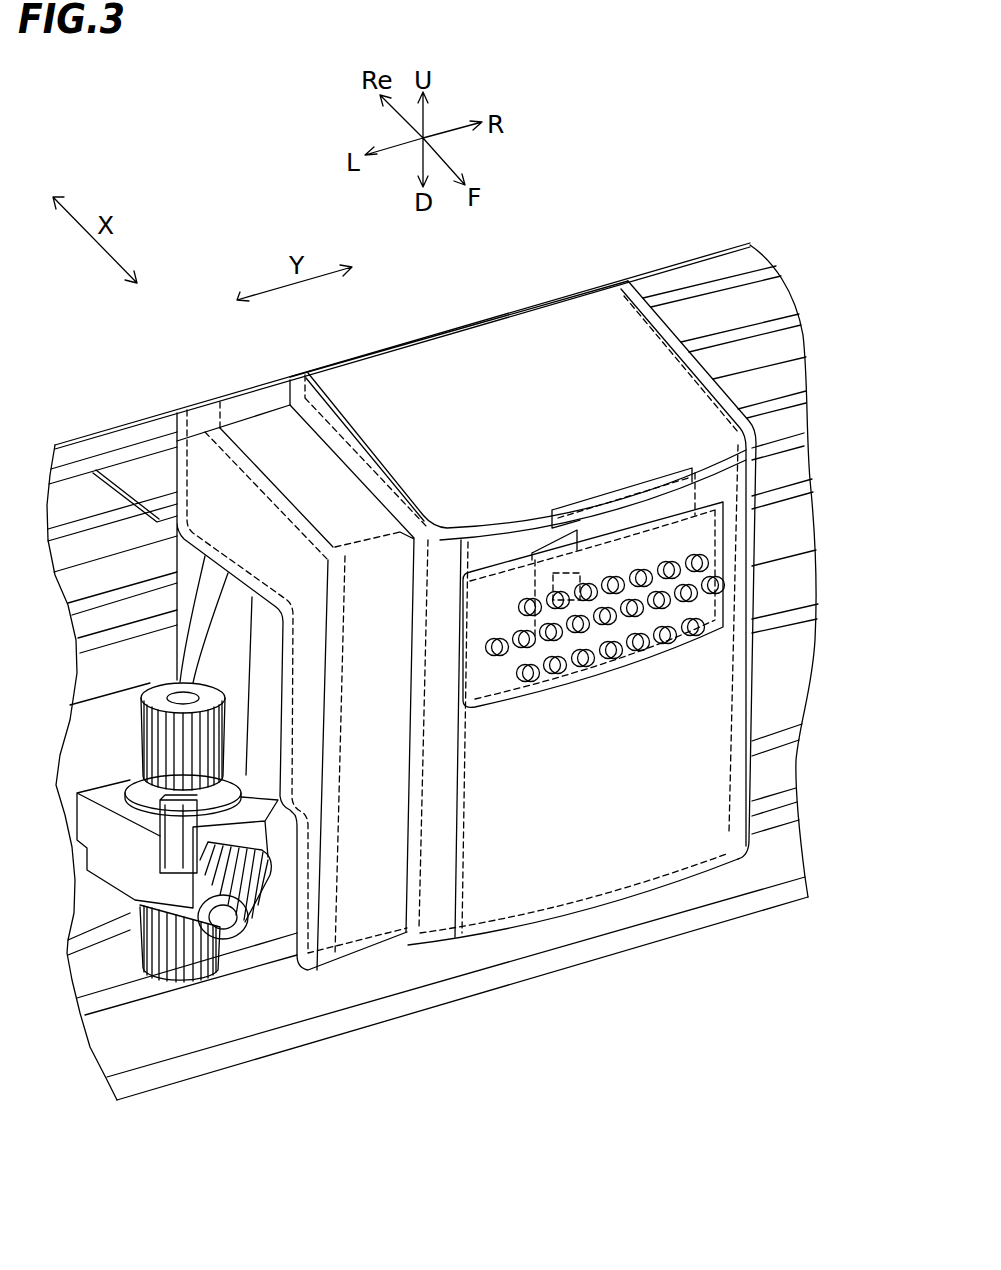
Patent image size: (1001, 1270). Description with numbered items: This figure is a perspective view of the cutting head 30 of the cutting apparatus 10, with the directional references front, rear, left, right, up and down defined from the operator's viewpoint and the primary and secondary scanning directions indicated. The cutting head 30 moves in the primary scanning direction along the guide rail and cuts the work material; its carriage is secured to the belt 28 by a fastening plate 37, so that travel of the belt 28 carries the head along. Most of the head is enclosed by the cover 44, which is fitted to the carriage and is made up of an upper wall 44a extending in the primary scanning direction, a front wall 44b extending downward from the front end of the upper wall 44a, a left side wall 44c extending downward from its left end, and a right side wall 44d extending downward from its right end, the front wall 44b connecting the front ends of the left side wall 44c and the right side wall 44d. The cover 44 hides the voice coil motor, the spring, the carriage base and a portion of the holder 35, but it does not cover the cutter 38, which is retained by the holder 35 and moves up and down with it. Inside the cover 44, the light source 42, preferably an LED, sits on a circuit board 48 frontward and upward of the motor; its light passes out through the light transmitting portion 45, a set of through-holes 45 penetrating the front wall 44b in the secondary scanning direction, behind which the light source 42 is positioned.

The cutting apparatus 10 is at (632, 180).
The belt 28 is at (97, 478).
The cutting head 30 is at (508, 337).
The holder 35 is at (224, 636).
The fastening plate 37 is at (148, 476).
The cutter 38 is at (175, 962).
The light source 42 is at (598, 605).
The cover 44 is at (436, 347).
The upper wall 44a is at (600, 338).
The front wall 44b is at (665, 835).
The left side wall 44c is at (224, 494).
The right side wall 44d is at (668, 316).
The light transmitting portion 45 is at (596, 660).
The circuit board 48 is at (628, 570).